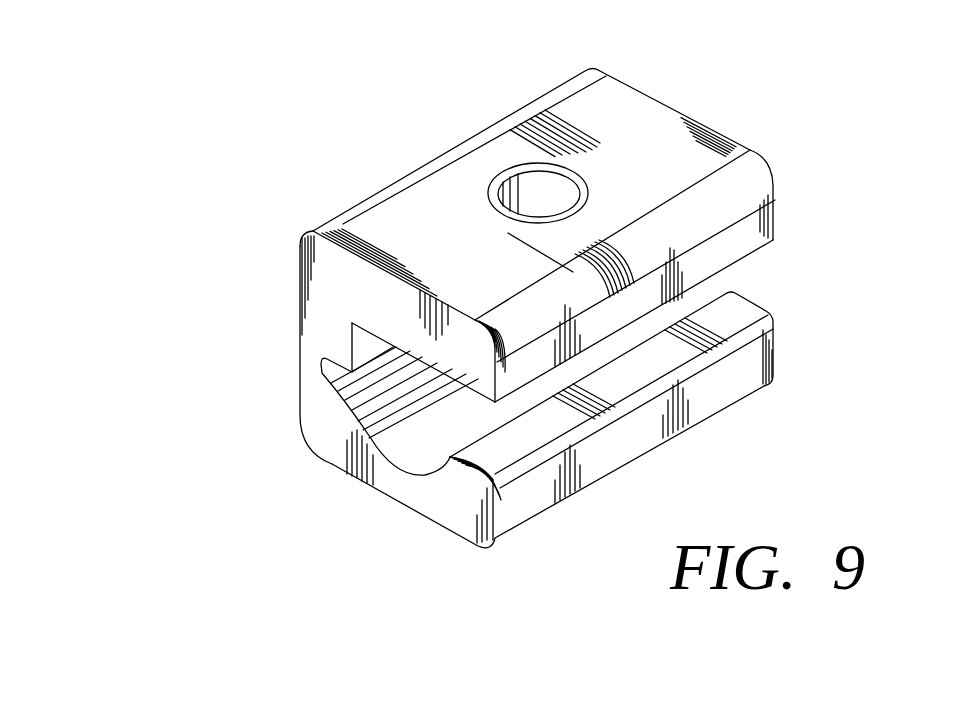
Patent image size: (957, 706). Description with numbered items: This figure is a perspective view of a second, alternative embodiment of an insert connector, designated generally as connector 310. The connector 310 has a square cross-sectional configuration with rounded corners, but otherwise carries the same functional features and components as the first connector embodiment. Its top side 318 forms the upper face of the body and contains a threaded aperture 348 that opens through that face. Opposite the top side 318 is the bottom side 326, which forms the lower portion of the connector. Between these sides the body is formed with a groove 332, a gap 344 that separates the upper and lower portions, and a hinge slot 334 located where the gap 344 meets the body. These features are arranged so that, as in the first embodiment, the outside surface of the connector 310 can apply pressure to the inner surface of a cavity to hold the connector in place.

The connector 310 is at (177, 99).
The top side 318 is at (658, 125).
The bottom side 326 is at (437, 523).
The groove 332 is at (300, 323).
The hinge slot 334 is at (327, 374).
The gap 344 is at (467, 424).
The threaded aperture 348 is at (529, 183).